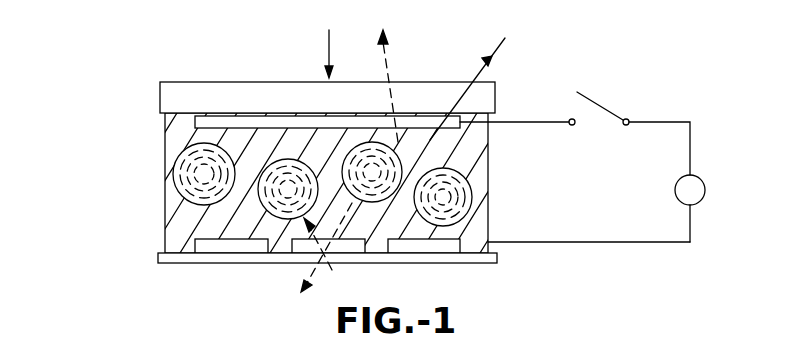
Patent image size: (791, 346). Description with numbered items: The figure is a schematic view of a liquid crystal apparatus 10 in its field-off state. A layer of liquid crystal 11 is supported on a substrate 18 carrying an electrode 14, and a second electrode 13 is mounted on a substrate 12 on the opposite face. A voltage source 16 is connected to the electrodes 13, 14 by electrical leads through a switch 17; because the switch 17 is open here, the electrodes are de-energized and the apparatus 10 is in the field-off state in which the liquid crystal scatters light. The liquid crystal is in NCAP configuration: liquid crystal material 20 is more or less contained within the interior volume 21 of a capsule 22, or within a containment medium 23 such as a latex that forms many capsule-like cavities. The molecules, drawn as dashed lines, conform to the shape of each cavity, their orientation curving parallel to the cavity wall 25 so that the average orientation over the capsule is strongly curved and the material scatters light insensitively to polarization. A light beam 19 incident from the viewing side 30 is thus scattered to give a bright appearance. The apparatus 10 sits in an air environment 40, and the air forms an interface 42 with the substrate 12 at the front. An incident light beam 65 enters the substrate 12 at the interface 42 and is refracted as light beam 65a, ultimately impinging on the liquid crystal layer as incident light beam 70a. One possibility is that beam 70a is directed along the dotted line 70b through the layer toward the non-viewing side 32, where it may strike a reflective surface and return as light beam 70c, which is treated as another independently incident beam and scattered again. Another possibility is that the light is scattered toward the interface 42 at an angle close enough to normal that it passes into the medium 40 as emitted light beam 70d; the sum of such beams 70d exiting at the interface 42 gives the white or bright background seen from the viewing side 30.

The liquid crystal apparatus 10 is at (122, 160).
The liquid crystal 11 is at (157, 222).
The substrate 12 is at (240, 86).
The second electrode 13 is at (176, 128).
The electrode 14 is at (443, 258).
The voltage source 16 is at (706, 190).
The switch 17 is at (615, 102).
The substrate 18 is at (497, 264).
The light beam 19 is at (331, 46).
The liquid crystal material 20 is at (472, 209).
The interior volume 21 is at (466, 197).
The capsule 22 is at (462, 183).
The containment medium 23 is at (300, 135).
The cavity wall 25 is at (490, 237).
The viewing side 30 is at (172, 18).
The non-viewing side 32 is at (172, 300).
The air environment 40 is at (442, 50).
The interface 42 is at (490, 82).
The incident light beam 65 is at (510, 33).
The refracted light beam 65a is at (455, 86).
The incident light beam 70a is at (430, 140).
The light beam 70b is at (344, 240).
The light beam 70c is at (297, 264).
The emitted light beam 70d is at (385, 50).